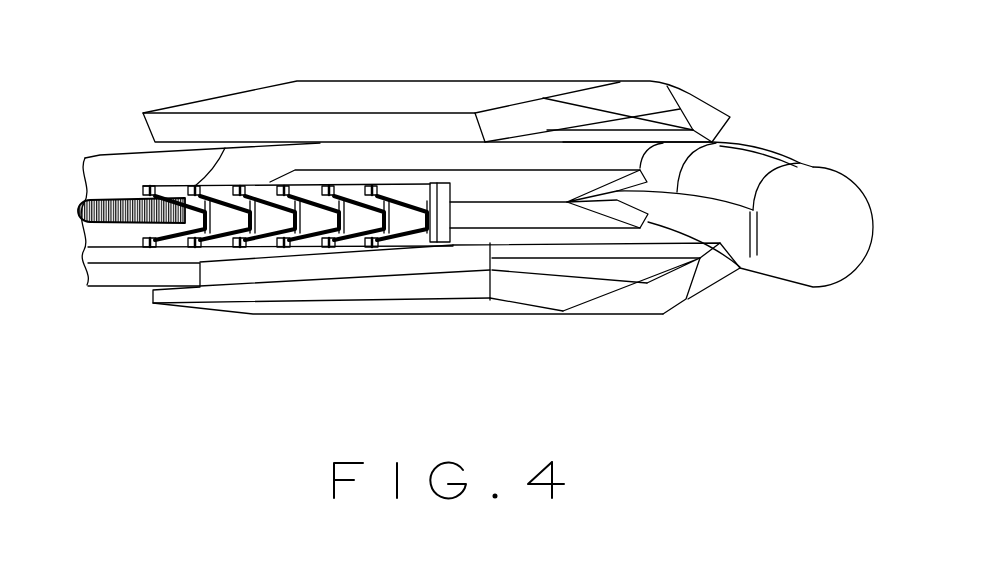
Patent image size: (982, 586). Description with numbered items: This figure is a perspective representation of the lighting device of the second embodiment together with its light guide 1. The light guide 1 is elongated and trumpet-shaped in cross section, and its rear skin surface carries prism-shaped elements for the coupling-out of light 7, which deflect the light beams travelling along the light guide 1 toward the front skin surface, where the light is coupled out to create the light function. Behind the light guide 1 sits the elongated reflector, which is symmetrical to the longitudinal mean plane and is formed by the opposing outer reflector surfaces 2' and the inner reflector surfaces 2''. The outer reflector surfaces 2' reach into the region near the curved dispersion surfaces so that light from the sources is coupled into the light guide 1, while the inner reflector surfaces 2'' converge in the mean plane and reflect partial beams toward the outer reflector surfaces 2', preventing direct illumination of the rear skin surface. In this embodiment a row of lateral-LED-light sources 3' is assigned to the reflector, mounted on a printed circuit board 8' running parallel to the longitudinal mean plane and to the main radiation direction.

The light guide 1 is at (823, 197).
The outer reflector surfaces 2' is at (436, 196).
The inner reflector surfaces 2'' is at (602, 193).
The lateral-LED-light sources 3' is at (270, 277).
The elements for the coupling-out of light 7 is at (102, 225).
The printed circuit board 8' is at (289, 306).